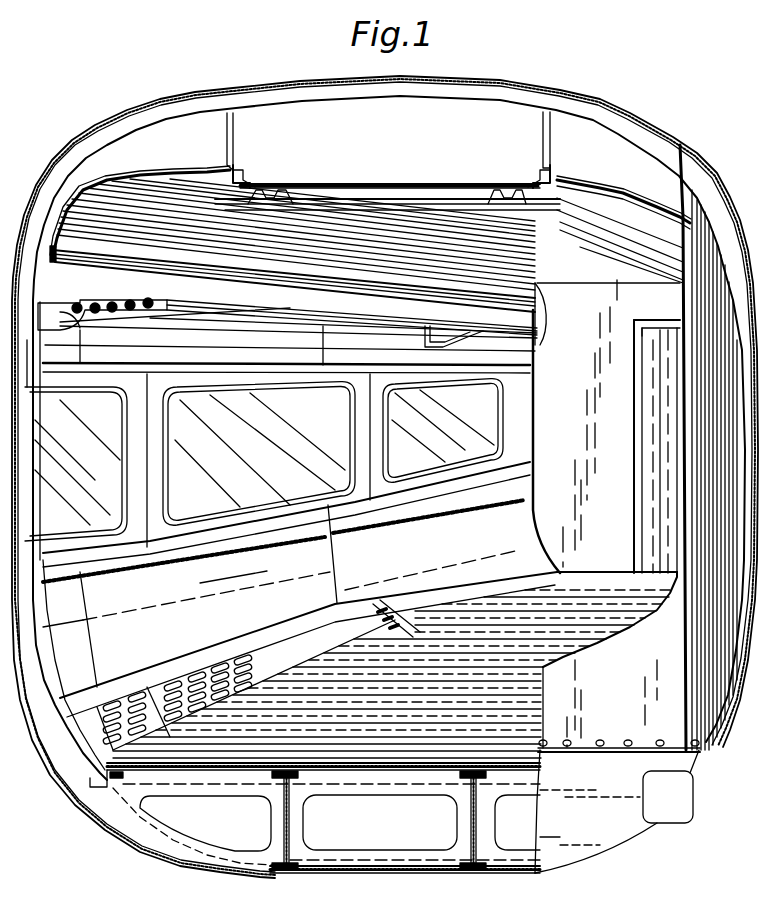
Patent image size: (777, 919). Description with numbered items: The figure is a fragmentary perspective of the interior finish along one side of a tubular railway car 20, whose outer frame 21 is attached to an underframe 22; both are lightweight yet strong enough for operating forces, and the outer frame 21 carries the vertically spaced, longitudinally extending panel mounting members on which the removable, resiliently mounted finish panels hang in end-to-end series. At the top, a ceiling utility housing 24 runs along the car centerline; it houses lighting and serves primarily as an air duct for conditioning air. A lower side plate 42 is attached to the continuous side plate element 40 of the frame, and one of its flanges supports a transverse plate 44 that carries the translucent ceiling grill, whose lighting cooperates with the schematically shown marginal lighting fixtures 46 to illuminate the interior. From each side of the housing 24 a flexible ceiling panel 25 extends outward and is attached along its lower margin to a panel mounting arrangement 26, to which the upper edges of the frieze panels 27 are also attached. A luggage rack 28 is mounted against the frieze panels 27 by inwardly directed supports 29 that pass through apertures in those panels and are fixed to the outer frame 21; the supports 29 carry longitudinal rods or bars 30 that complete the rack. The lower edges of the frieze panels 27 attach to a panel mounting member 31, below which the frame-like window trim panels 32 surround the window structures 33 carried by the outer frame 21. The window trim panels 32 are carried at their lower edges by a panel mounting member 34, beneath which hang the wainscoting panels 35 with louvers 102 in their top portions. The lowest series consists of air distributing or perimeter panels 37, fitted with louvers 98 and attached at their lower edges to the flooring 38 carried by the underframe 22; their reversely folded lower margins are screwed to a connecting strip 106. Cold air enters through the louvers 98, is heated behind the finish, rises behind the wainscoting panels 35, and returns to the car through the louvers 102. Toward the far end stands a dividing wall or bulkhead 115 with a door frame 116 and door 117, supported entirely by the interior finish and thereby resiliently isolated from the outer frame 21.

The tubular railway car 20 is at (385, 477).
The outer frame 21 is at (39, 161).
The underframe 22 is at (395, 766).
The ceiling utility housing 24 is at (370, 175).
The flexible ceiling panel 25 is at (370, 207).
The panel mounting arrangement 26 is at (298, 286).
The frieze panels 27 is at (249, 264).
The luggage rack 28 is at (291, 311).
The supports 29 is at (264, 309).
The rods or bars 30 is at (112, 292).
The panel mounting member 31 is at (293, 437).
The window trim panels 32 is at (264, 459).
The window structures 33 is at (48, 480).
The panel mounting member 34 is at (286, 514).
The wainscoting panels 35 is at (54, 642).
The air distributing or perimeter panels 37 is at (526, 603).
The flooring 38 is at (443, 700).
The side plate element 40 is at (236, 130).
The lower side plate 42 is at (391, 164).
The transverse plate 44 is at (387, 178).
The marginal lighting fixtures 46 is at (387, 178).
The louvers 98 is at (276, 675).
The louvers 102 is at (284, 549).
The connecting strip 106 is at (347, 682).
The dividing wall or bulkhead 115 is at (575, 435).
The door frame 116 is at (634, 384).
The door 117 is at (658, 324).